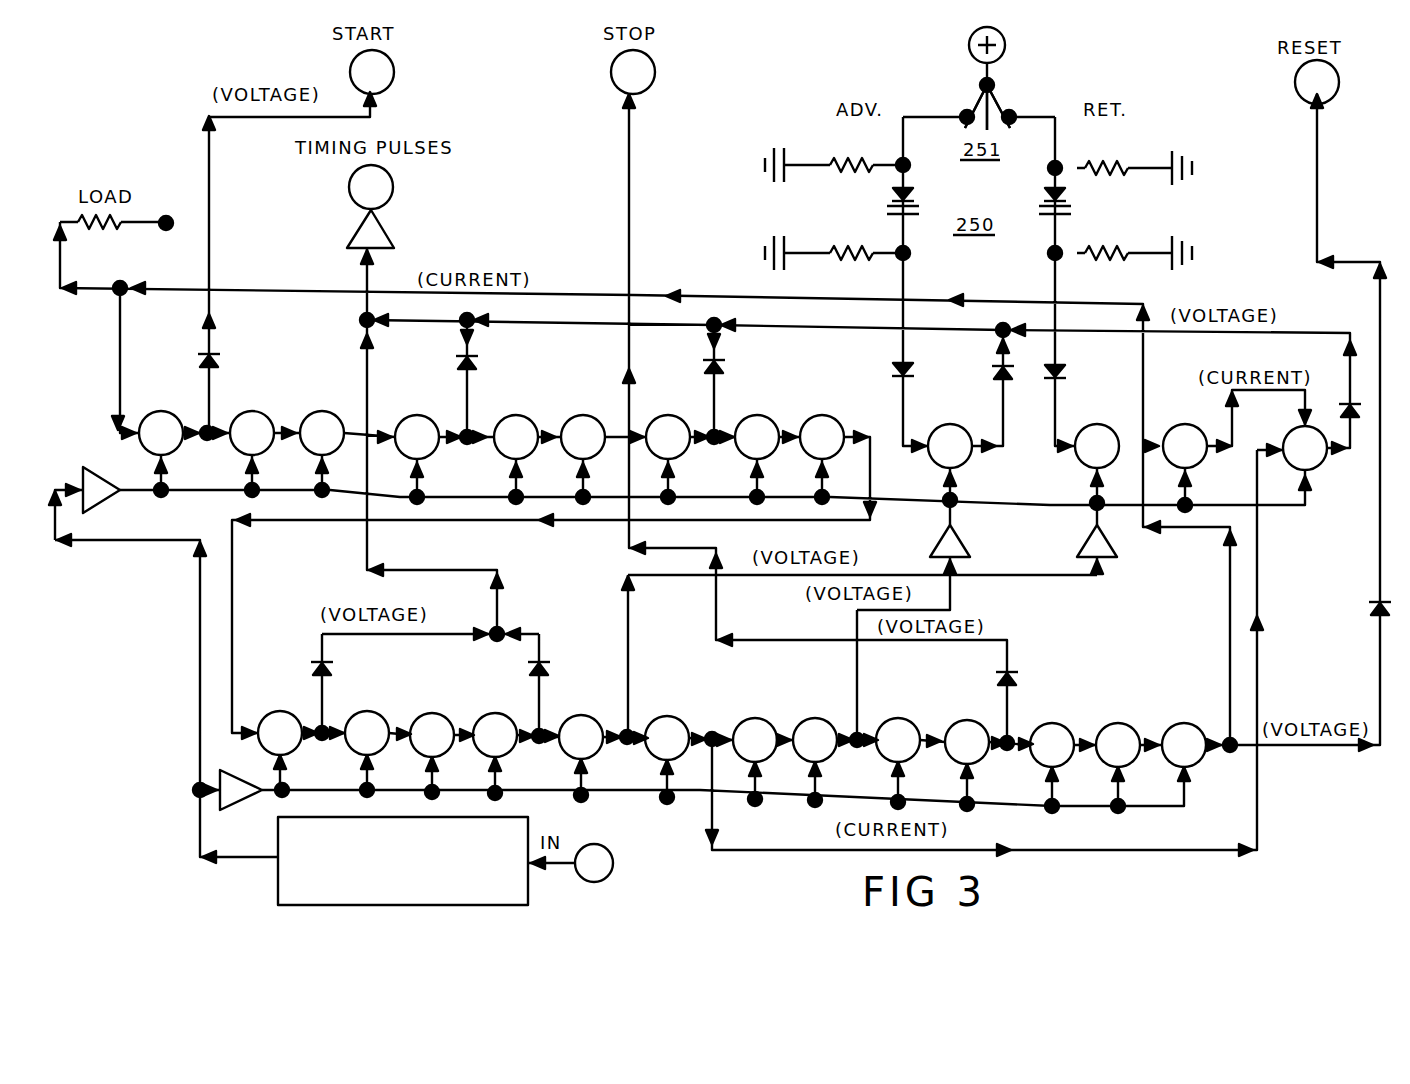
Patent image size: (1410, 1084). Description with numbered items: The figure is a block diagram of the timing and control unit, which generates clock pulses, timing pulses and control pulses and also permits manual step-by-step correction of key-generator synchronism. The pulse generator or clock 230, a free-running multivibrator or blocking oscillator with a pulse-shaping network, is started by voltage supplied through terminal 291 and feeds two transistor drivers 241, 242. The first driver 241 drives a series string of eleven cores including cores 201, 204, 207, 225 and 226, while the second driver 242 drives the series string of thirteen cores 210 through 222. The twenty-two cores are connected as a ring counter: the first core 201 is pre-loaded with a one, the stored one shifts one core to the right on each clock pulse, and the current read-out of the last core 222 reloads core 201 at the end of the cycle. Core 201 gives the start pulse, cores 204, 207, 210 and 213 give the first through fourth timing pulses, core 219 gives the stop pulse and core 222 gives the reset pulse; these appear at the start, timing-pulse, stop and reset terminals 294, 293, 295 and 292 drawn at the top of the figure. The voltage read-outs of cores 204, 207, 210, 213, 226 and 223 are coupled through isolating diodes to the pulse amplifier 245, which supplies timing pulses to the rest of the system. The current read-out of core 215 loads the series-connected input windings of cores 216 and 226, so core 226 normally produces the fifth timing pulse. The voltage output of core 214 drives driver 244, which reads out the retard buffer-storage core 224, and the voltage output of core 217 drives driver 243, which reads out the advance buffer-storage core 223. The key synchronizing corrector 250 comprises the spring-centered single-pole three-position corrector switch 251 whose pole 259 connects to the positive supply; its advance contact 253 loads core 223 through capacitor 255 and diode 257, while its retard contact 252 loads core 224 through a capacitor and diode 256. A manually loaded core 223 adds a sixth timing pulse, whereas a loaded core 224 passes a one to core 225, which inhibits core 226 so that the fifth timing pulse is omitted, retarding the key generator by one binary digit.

The first stage core 201 is at (151, 411).
The core 204 is at (408, 416).
The core 207 is at (657, 416).
The core 210 is at (266, 716).
The core 213 is at (480, 716).
The core 214 is at (565, 718).
The core 215 is at (652, 720).
The core 216 is at (740, 722).
The core 217 is at (800, 722).
The core 219 is at (945, 724).
The last core 222 is at (1162, 728).
The advance buffer-storage core 223 is at (935, 427).
The retard buffer-storage core 224 is at (1086, 428).
The core 225 is at (1170, 428).
The core 226 is at (1290, 435).
The clock 230 is at (403, 861).
The driver 241 is at (100, 498).
The driver 242 is at (220, 812).
The driver 243 is at (962, 548).
The driver 244 is at (1118, 560).
The pulse amplifier 245 is at (383, 231).
The key synchronizing corrector 250 is at (1066, 218).
The corrector switch 251 is at (987, 107).
The retard contact 252 is at (1008, 110).
The advance contact 253 is at (960, 112).
The capacitor 255 is at (889, 212).
The diode 256 is at (1065, 373).
The diode 257 is at (893, 372).
The pole 259 is at (995, 82).
The terminal 291 is at (580, 848).
The reset terminal 292 is at (1333, 98).
The timing pulses terminal 293 is at (388, 200).
The start terminal 294 is at (386, 84).
The stop terminal 295 is at (648, 87).